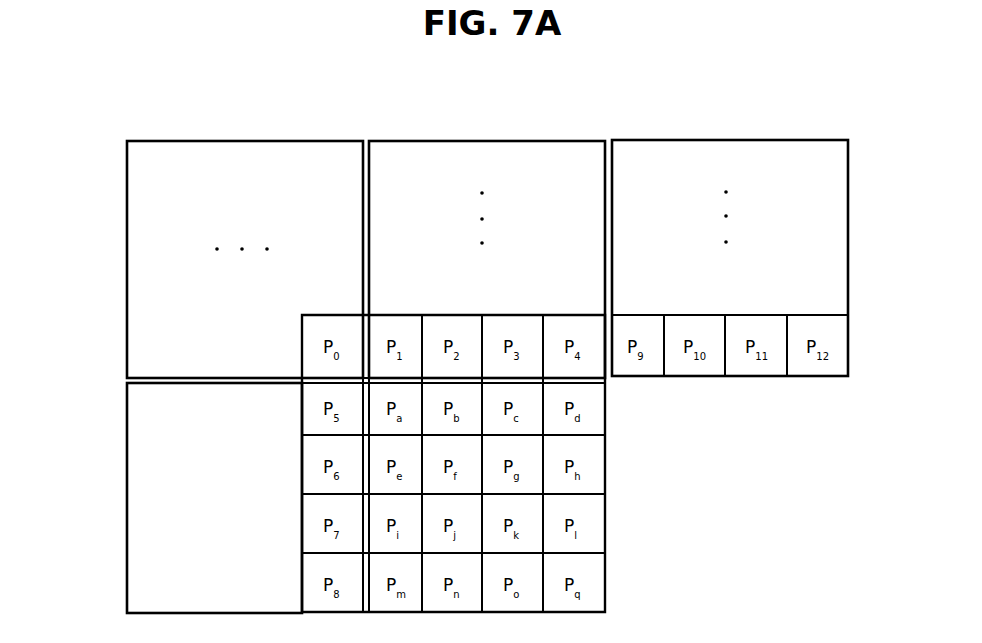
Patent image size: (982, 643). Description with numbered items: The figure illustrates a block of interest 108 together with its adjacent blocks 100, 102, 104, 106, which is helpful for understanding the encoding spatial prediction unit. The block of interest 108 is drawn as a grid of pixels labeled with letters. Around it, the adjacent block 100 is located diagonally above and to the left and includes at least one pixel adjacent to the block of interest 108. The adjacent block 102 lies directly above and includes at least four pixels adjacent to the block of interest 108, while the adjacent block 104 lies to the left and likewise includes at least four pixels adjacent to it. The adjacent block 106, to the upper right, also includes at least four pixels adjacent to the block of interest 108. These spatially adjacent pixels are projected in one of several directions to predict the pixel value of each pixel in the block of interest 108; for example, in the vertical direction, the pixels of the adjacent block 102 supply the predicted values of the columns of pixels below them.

The adjacent block 100 is at (127, 228).
The adjacent block 102 is at (575, 141).
The adjacent block 104 is at (127, 531).
The adjacent block 106 is at (812, 140).
The block of interest 108 is at (607, 467).